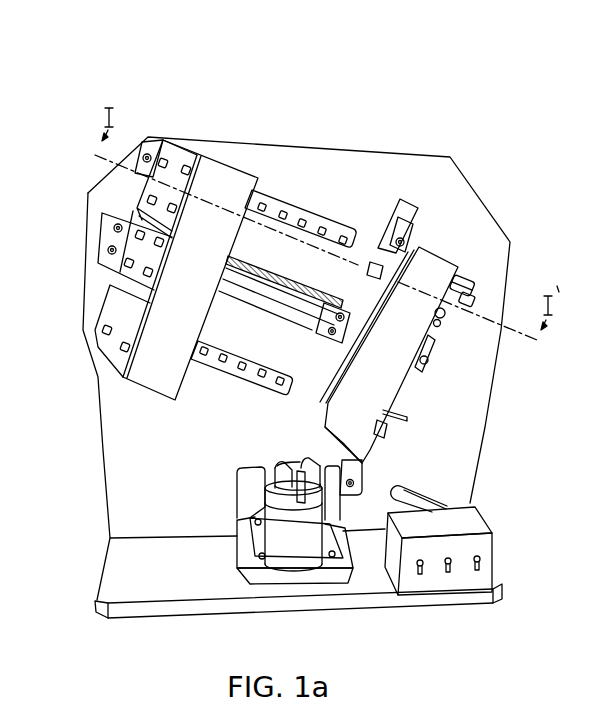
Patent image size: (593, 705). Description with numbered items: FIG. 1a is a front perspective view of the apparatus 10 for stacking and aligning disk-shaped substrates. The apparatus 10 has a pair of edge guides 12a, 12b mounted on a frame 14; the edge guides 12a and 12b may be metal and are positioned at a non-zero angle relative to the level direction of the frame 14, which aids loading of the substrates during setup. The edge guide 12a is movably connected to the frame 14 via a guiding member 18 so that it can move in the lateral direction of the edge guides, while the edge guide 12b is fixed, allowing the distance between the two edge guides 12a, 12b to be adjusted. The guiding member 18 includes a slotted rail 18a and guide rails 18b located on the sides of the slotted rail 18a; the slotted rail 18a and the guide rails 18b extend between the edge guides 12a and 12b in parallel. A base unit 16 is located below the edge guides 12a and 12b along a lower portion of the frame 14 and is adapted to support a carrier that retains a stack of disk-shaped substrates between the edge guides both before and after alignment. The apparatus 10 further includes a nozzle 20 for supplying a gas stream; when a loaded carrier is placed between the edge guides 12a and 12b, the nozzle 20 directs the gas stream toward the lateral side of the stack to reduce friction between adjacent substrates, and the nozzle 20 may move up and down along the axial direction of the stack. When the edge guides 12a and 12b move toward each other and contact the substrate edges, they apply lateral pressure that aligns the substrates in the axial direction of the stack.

The apparatus for stacking and aligning disk-shaped substrates 10 is at (82, 84).
The edge guide 12a is at (133, 378).
The edge guide 12b is at (432, 258).
The frame 14 is at (245, 152).
The base unit 16 is at (281, 568).
The guiding member 18 is at (398, 107).
The slotted rail 18a is at (290, 288).
The guide rail 18b is at (340, 232).
The nozzle 20 is at (401, 240).